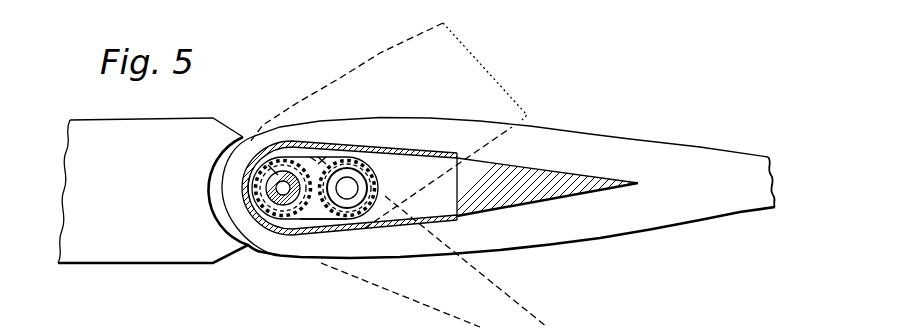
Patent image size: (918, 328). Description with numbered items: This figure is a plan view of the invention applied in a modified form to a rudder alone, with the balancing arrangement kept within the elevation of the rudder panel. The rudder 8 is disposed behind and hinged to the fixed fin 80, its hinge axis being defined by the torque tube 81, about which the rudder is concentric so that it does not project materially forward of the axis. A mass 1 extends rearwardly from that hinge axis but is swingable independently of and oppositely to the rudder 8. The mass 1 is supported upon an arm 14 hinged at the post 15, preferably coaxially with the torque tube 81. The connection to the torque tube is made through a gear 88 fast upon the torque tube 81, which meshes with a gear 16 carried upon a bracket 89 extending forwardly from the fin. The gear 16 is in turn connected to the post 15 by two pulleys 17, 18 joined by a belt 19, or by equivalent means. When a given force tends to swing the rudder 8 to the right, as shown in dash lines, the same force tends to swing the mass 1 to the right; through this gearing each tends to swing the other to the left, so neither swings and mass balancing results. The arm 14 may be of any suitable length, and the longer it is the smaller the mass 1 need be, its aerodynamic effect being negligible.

The mass 1 is at (582, 180).
The rudder 8 is at (728, 205).
The arm 14 is at (396, 152).
The post 15 is at (276, 190).
The gear 16 is at (337, 213).
The pulley 17 is at (350, 214).
The pulley 18 is at (273, 183).
The belt 19 is at (313, 160).
The fixed fin 80 is at (100, 264).
The torque tube 81 is at (310, 235).
The gear 88 is at (258, 186).
The bracket 89 is at (318, 160).